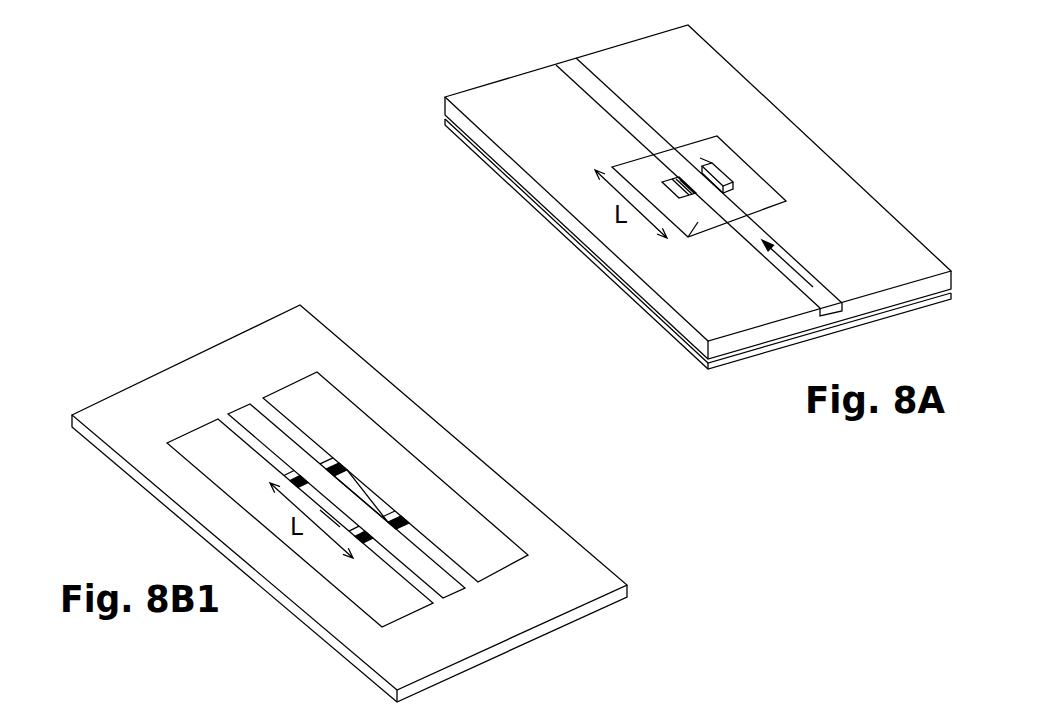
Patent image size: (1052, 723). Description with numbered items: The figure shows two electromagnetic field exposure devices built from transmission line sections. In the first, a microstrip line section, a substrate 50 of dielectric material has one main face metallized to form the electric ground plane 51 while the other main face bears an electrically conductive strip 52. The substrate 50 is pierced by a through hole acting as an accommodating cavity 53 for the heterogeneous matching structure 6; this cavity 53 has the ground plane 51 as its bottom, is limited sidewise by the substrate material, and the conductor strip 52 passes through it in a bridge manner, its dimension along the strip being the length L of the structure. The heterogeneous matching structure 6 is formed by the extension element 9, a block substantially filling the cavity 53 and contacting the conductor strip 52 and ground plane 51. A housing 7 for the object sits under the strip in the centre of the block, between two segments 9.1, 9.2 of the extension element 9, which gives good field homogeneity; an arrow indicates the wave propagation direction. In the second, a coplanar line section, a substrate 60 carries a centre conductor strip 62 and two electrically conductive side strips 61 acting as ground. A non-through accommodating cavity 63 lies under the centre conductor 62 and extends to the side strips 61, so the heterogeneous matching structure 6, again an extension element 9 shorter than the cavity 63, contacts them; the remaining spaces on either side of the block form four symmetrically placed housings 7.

In FIG. 8A, the heterogeneous matching structure 6 is at (759, 112).
In FIG. 8B1, the heterogeneous matching structure 6 is at (390, 441).
In FIG. 8A, the housing 7 is at (721, 165).
In FIG. 8B1, the housing 7 is at (334, 460).
In FIG. 8A, the extension element 9 is at (744, 198).
In FIG. 8B1, the extension element 9 is at (376, 497).
In FIG. 8A, the segment of the extension element 9.1 is at (693, 158).
In FIG. 8A, the segment of the extension element 9.2 is at (696, 222).
In FIG. 8A, the substrate 50 is at (952, 281).
In FIG. 8A, the electric ground plane 51 is at (953, 292).
In FIG. 8A, the electrically conductive strip 52 is at (832, 309).
In FIG. 8A, the accommodating cavity 53 is at (784, 190).
In FIG. 8B1, the substrate 60 is at (568, 623).
In FIG. 8B1, the electrically conductive side strips 61 is at (287, 400).
In FIG. 8B1, the centre conductor strip 62 is at (256, 415).
In FIG. 8B1, the accommodating cavity 63 is at (327, 527).